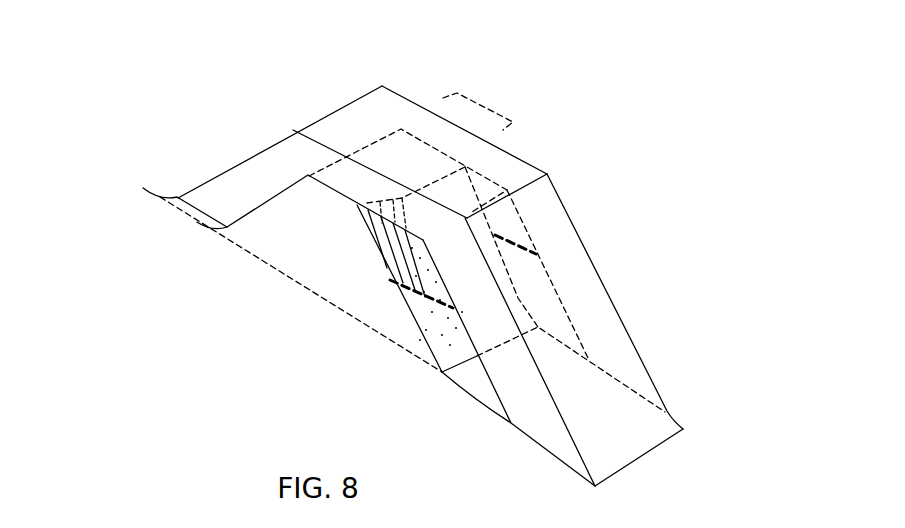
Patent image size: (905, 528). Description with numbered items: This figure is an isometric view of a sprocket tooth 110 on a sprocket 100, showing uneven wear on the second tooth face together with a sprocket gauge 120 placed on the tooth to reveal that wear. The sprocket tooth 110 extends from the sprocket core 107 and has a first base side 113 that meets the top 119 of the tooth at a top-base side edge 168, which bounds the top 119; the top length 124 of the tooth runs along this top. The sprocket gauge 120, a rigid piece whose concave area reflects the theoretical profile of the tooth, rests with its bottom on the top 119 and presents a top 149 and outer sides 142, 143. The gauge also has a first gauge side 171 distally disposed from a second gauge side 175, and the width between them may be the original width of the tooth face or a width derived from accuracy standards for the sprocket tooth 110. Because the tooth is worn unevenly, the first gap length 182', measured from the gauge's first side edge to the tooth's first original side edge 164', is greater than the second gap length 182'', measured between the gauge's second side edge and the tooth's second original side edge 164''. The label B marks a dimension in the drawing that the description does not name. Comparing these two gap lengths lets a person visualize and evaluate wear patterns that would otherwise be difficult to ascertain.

The sprocket 100 is at (96, 168).
The sprocket core 107 is at (267, 341).
The sprocket tooth 110 is at (600, 231).
The first base side 113 is at (247, 235).
The top 119 is at (412, 170).
The sprocket gauge 120 is at (340, 78).
The top length 124 is at (496, 107).
The outer side 142 is at (610, 333).
The outer side 143 is at (220, 150).
The top 149 is at (507, 173).
The first original side edge 164' is at (385, 285).
The second original side edge 164'' is at (575, 262).
The top-base side edge 168 is at (323, 180).
The first gauge side 171 is at (282, 160).
The second gauge side 175 is at (675, 376).
The first gap length 182' is at (421, 343).
The second gap length 182'' is at (589, 207).
The width B is at (250, 280).